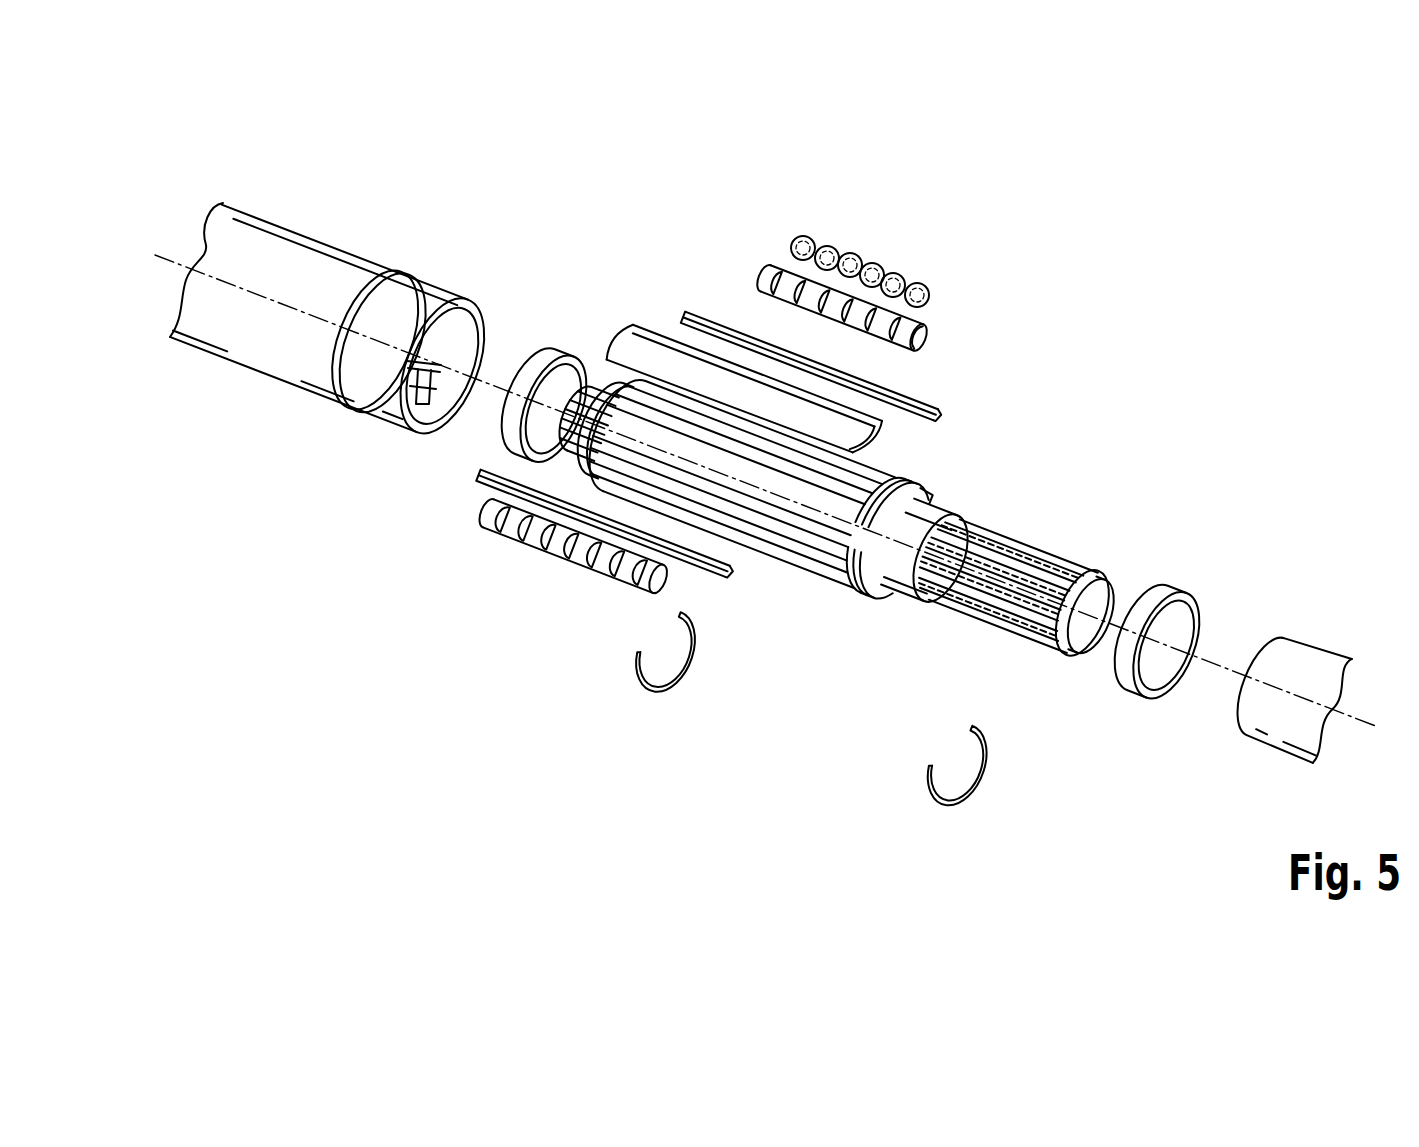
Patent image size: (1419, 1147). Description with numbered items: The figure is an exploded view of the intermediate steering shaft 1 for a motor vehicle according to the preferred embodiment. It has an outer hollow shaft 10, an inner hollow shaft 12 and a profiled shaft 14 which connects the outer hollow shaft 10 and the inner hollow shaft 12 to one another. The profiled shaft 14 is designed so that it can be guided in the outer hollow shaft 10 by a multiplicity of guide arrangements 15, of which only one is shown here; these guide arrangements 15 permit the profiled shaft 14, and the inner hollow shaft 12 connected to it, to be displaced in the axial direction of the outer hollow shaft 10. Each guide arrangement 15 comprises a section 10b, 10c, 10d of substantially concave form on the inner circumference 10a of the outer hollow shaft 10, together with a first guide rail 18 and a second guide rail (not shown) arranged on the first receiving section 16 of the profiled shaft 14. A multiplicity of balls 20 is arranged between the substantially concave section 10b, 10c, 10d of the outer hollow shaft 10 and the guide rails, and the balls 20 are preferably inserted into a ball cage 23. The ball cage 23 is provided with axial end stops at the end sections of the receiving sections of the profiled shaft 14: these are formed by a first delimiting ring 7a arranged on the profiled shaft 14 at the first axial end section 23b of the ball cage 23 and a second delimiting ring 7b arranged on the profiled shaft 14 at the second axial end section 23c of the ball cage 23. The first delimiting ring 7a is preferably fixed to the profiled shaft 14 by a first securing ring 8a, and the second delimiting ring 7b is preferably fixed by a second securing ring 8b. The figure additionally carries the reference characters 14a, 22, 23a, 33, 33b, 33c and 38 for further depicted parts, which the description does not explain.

The intermediate steering shaft 1 is at (765, 509).
The first delimiting ring 7a is at (540, 358).
The second delimiting ring 7b is at (1128, 684).
The first securing ring 8a is at (668, 694).
The second securing ring 8b is at (966, 800).
The outer hollow shaft 10 is at (340, 346).
The inner circumference 10a is at (432, 408).
The substantially concave section 10b is at (456, 298).
The substantially concave section 10c is at (343, 372).
The substantially concave section 10d is at (412, 386).
The inner hollow shaft 12 is at (1308, 656).
The profiled shaft 14 is at (836, 563).
The shaft collar 14a is at (862, 496).
The guide arrangement 15 is at (836, 469).
The first receiving section 16 is at (808, 524).
The first guide rail 18 is at (938, 406).
The balls 20 is at (916, 287).
The guide key segment 22 is at (647, 343).
The ball cage 23 is at (856, 265).
The ball cage rod 23a is at (908, 346).
The first axial end section 23b is at (765, 280).
The second axial end section 23c is at (921, 337).
The second ball cage 33 is at (552, 580).
The second ball cage first end 33b is at (492, 517).
The second ball cage second end 33c is at (654, 584).
The second guide rail 38 is at (488, 485).